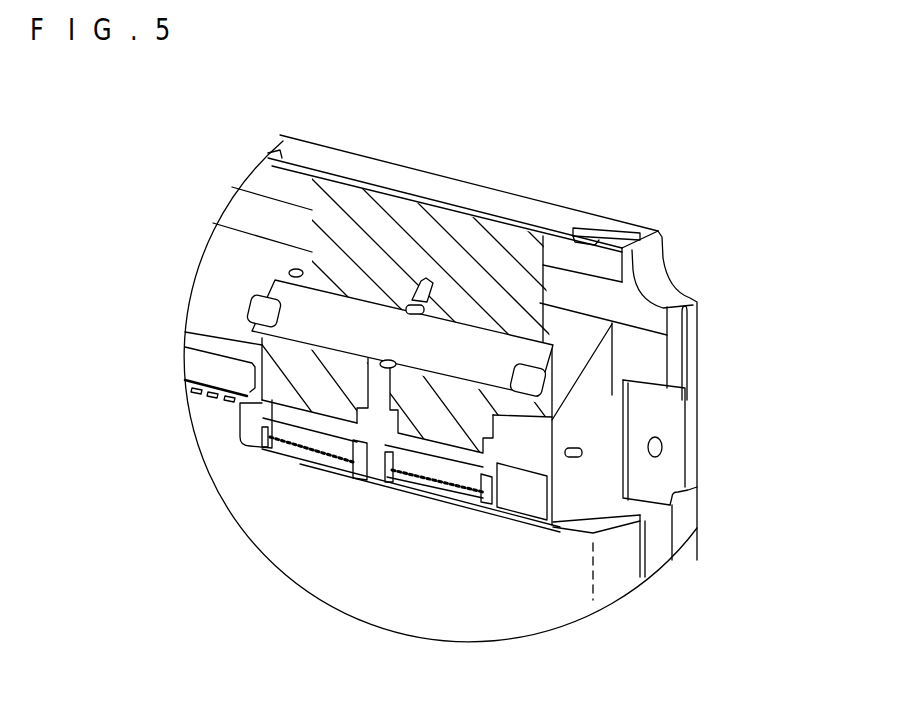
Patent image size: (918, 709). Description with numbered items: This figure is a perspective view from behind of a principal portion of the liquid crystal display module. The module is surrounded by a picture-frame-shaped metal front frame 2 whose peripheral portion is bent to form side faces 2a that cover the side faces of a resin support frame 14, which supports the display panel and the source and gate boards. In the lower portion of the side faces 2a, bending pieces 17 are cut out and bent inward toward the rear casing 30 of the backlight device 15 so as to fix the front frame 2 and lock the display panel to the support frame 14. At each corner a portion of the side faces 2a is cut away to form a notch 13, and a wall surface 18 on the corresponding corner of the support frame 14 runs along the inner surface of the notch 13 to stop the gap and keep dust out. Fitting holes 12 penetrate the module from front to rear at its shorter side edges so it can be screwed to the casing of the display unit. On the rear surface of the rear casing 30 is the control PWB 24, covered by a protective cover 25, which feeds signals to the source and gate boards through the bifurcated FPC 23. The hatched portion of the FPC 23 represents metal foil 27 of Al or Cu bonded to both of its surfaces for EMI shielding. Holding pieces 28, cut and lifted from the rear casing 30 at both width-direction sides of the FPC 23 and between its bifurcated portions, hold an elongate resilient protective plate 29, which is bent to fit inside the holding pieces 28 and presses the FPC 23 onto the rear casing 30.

The front frame 2 is at (533, 205).
The side faces 2a is at (433, 178).
The fitting holes 12 is at (663, 448).
The notch 13 is at (680, 285).
The support frame 14 is at (667, 292).
The backlight device 15 is at (577, 377).
The bending pieces 17 is at (596, 227).
The wall surface 18 is at (657, 260).
The FPC 23 is at (250, 405).
The control PWB 24 is at (538, 505).
The protective cover 25 is at (348, 580).
The metal foil 27 is at (397, 215).
The holding pieces 28 is at (262, 311).
The protective plate 29 is at (276, 281).
The rear casing 30 is at (214, 277).